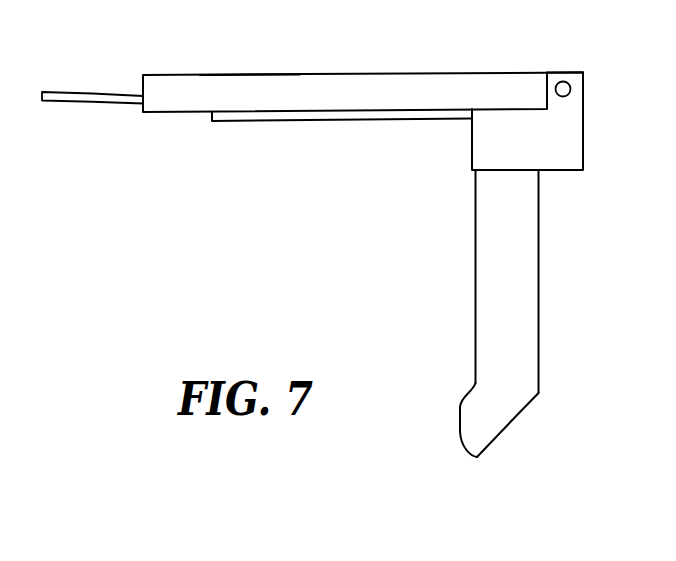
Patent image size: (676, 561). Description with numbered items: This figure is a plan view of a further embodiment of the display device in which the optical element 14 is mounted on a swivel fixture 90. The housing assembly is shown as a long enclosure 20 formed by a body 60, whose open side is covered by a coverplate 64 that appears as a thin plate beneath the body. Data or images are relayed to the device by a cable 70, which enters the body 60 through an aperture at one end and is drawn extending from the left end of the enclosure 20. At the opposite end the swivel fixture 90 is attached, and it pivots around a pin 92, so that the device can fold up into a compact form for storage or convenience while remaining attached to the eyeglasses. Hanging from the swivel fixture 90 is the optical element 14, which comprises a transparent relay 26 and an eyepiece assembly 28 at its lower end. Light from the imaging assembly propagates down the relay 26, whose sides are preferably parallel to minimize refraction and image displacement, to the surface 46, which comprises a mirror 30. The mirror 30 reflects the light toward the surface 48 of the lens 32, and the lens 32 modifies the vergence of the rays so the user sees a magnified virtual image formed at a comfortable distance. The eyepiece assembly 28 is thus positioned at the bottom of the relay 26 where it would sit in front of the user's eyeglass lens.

The optical element 14 is at (570, 293).
The enclosure 20 is at (403, 80).
The transparent fixture or relay 26 is at (523, 233).
The eyepiece assembly 28 is at (484, 432).
The mirror 30 is at (528, 407).
The lens 32 is at (458, 425).
The surface 46 is at (498, 435).
The surface of the lens 48 is at (463, 406).
The body 60 is at (250, 83).
The coverplate 64 is at (233, 113).
The cable 70 is at (86, 92).
The swivel fixture 90 is at (560, 138).
The pin 92 is at (571, 89).